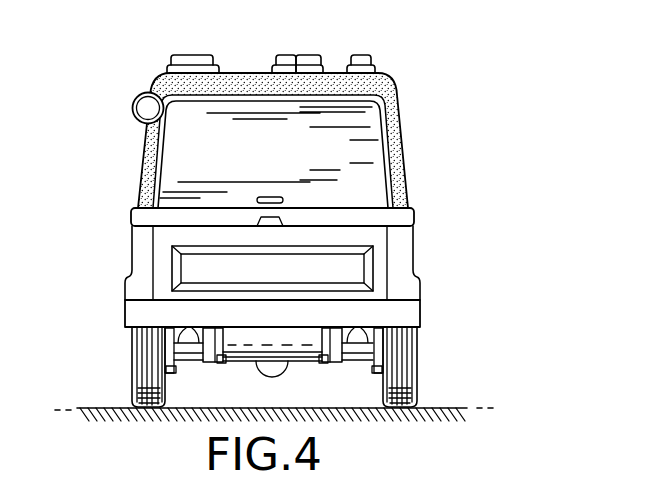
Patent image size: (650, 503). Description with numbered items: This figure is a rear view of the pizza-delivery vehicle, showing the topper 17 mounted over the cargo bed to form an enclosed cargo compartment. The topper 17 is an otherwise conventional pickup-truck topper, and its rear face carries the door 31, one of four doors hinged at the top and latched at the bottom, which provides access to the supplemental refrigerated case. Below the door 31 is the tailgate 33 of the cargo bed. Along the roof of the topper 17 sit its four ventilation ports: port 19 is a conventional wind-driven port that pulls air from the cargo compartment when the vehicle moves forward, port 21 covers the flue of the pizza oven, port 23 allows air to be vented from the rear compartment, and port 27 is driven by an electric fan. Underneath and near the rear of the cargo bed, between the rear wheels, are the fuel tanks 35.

The topper 17 is at (402, 183).
The port 19 is at (187, 60).
The port 21 is at (282, 60).
The port 23 is at (324, 58).
The port 27 is at (375, 63).
The door 31 is at (340, 143).
The tailgate 33 is at (370, 263).
The fuel tanks 35 is at (307, 343).